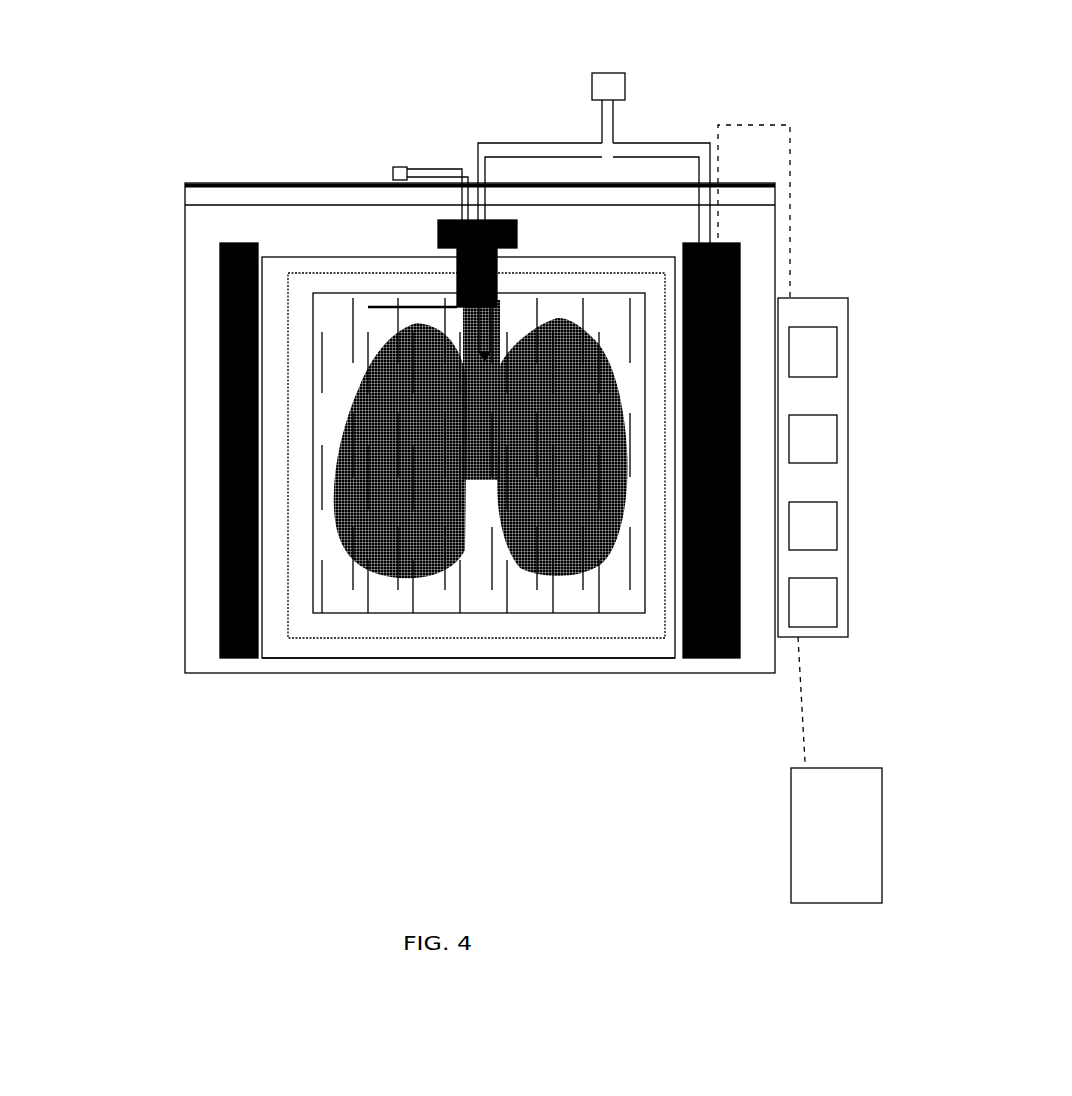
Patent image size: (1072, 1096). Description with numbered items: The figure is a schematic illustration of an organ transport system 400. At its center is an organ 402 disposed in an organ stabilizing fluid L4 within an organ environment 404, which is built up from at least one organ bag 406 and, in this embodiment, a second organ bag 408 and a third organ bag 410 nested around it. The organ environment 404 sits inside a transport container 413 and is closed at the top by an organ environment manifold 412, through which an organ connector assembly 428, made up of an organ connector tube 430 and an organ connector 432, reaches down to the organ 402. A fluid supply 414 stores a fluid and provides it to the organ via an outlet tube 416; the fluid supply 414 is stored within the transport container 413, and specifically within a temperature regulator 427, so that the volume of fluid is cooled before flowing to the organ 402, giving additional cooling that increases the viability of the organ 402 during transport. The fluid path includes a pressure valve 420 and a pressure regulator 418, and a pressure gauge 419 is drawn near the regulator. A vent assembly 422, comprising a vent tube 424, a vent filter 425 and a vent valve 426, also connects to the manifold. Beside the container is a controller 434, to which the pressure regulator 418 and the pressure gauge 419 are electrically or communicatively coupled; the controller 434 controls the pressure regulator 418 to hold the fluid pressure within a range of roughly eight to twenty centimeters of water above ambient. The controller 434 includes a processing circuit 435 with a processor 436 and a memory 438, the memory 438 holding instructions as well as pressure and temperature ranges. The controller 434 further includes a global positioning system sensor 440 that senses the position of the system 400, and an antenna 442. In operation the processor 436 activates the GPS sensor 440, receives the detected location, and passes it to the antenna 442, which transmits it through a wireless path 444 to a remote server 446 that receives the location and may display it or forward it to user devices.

The system 400 is at (216, 834).
The organ 402 is at (388, 580).
The organ environment 404 is at (268, 676).
The organ bag 406 is at (533, 617).
The second organ bag 408 is at (467, 638).
The third organ bag 410 is at (323, 658).
The organ environment manifold 412 is at (438, 243).
The transport container 413 is at (197, 638).
The fluid supply 414 is at (712, 618).
The outlet tube 416 is at (665, 143).
The pressure regulator 418 is at (738, 313).
The pressure gauge 419 is at (713, 287).
The pressure valve 420 is at (625, 82).
The vent assembly 422 is at (372, 147).
The vent tube 424 is at (437, 168).
The vent filter 425 is at (413, 169).
The vent valve 426 is at (393, 176).
The temperature regulator 427 is at (230, 508).
The organ connector assembly 428 is at (496, 335).
The organ connector tube 430 is at (493, 322).
The organ connector 432 is at (483, 355).
The controller 434 is at (850, 283).
The processing circuit 435 is at (862, 316).
The processor 436 is at (838, 447).
The memory 438 is at (838, 533).
The global positioning system sensor 440 is at (838, 352).
The antenna 442 is at (815, 628).
The wireless path 444 is at (803, 745).
The remote server 446 is at (882, 780).
The organ stabilizing fluid L4 is at (585, 585).